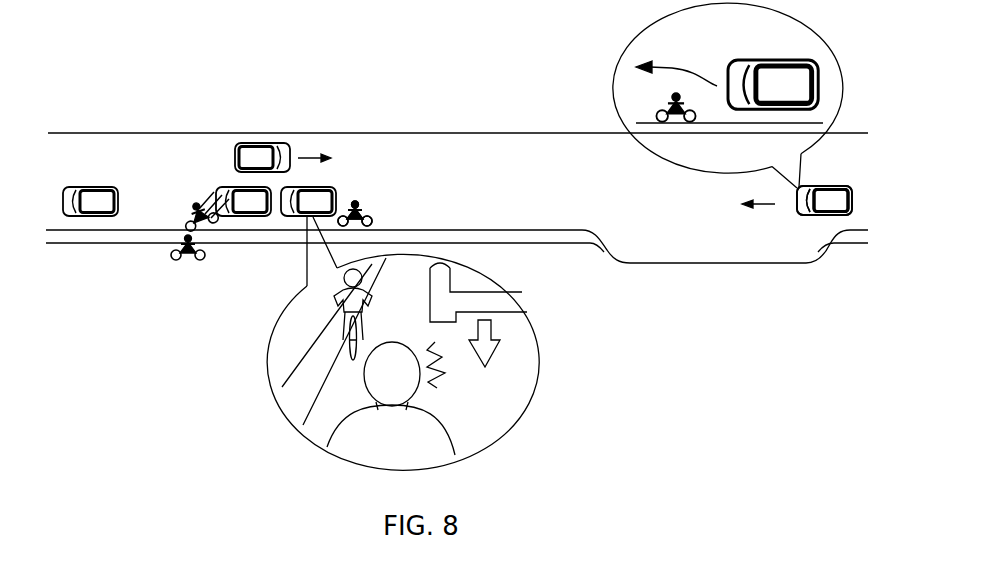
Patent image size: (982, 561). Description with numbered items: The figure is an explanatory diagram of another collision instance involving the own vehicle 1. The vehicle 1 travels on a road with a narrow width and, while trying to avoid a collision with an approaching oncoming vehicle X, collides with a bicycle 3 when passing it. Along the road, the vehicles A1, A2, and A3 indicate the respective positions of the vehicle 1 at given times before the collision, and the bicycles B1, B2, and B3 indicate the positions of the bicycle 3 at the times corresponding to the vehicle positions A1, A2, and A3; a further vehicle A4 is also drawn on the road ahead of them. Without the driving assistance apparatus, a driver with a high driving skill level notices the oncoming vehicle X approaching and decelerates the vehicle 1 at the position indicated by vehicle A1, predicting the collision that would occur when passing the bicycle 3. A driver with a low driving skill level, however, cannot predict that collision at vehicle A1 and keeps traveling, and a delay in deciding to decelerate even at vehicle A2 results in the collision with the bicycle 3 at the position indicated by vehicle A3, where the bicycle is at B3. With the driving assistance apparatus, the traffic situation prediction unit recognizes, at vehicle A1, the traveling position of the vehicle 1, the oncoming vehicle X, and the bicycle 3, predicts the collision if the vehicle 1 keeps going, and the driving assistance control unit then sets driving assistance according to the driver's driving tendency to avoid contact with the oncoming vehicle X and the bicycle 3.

The vehicle 1 is at (831, 205).
The bicycle 3 is at (366, 210).
The oncoming vehicle X is at (273, 157).
The vehicle A1 is at (818, 194).
The vehicle A2 is at (327, 194).
The vehicle A3 is at (221, 193).
The four-wheeled vehicle A4 is at (70, 196).
The bicycle B1 is at (376, 213).
The bicycle B2 is at (186, 212).
The bicycle B3 is at (181, 263).